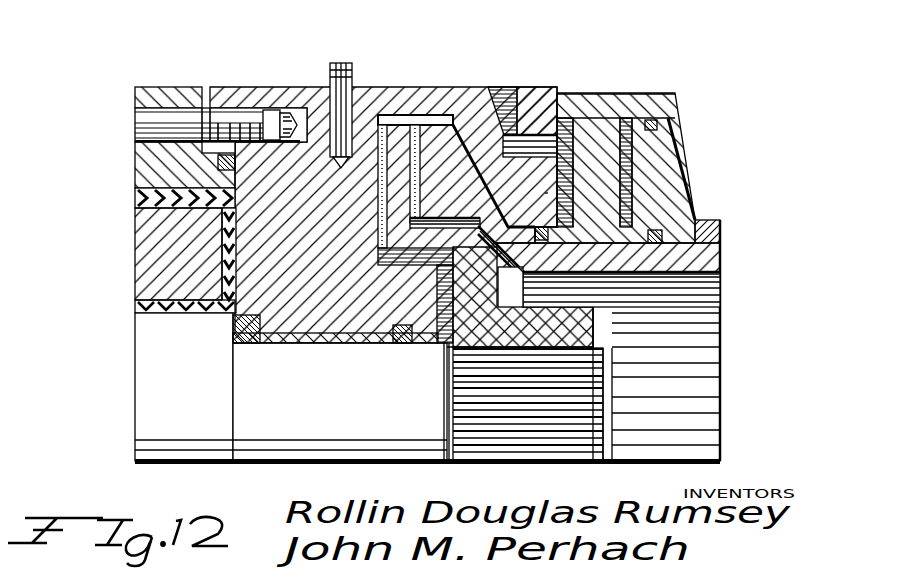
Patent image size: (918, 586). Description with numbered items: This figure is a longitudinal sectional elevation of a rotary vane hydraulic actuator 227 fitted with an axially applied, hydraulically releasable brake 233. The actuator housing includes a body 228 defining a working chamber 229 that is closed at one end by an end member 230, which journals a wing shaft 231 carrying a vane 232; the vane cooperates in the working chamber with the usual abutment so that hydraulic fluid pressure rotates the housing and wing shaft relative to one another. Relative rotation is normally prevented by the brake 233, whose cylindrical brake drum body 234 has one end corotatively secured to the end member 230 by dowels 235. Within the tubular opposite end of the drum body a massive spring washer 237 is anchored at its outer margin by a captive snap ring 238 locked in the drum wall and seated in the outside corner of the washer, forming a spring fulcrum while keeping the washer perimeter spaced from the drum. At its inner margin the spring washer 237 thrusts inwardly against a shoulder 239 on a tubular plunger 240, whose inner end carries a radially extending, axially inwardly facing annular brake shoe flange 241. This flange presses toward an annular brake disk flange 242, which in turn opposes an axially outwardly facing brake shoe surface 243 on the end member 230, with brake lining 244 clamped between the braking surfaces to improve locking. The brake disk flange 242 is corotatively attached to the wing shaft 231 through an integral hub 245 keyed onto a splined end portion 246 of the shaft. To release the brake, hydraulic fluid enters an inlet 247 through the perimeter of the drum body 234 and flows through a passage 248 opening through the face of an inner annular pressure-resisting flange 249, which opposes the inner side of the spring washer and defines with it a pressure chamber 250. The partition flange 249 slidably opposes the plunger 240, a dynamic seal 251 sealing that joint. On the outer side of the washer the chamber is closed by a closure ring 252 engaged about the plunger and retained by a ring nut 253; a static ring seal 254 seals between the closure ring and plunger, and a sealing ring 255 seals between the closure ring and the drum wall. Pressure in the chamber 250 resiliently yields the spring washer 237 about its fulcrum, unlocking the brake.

The rotary vane hydraulic actuator 227 is at (129, 85).
The body 228 is at (198, 65).
The working chamber 229 is at (135, 195).
The end member 230 is at (280, 75).
The wing shaft 231 is at (148, 382).
The vane 232 is at (150, 267).
The hydraulically releasable brake 233 is at (716, 142).
The brake drum body 234 is at (575, 96).
The dowels 235 is at (330, 68).
The spring washer 237 is at (588, 127).
The captive snap ring 238 is at (623, 120).
The shoulder 239 is at (655, 282).
The tubular plunger 240 is at (700, 264).
The brake shoe flange 241 is at (427, 140).
The brake disk flange 242 is at (393, 128).
The brake shoe surface 243 is at (380, 150).
The brake lining 244 is at (380, 190).
The hub 245 is at (527, 328).
The splined end portion 246 is at (498, 408).
The inlet 247 is at (516, 100).
The passage 248 is at (533, 143).
The pressure-resisting flange 249 is at (545, 193).
The pressure chamber 250 is at (562, 122).
The dynamic seal 251 is at (618, 215).
The closure ring 252 is at (667, 185).
The ring nut 253 is at (710, 235).
The static ring seal 254 is at (650, 280).
The sealing ring 255 is at (688, 120).